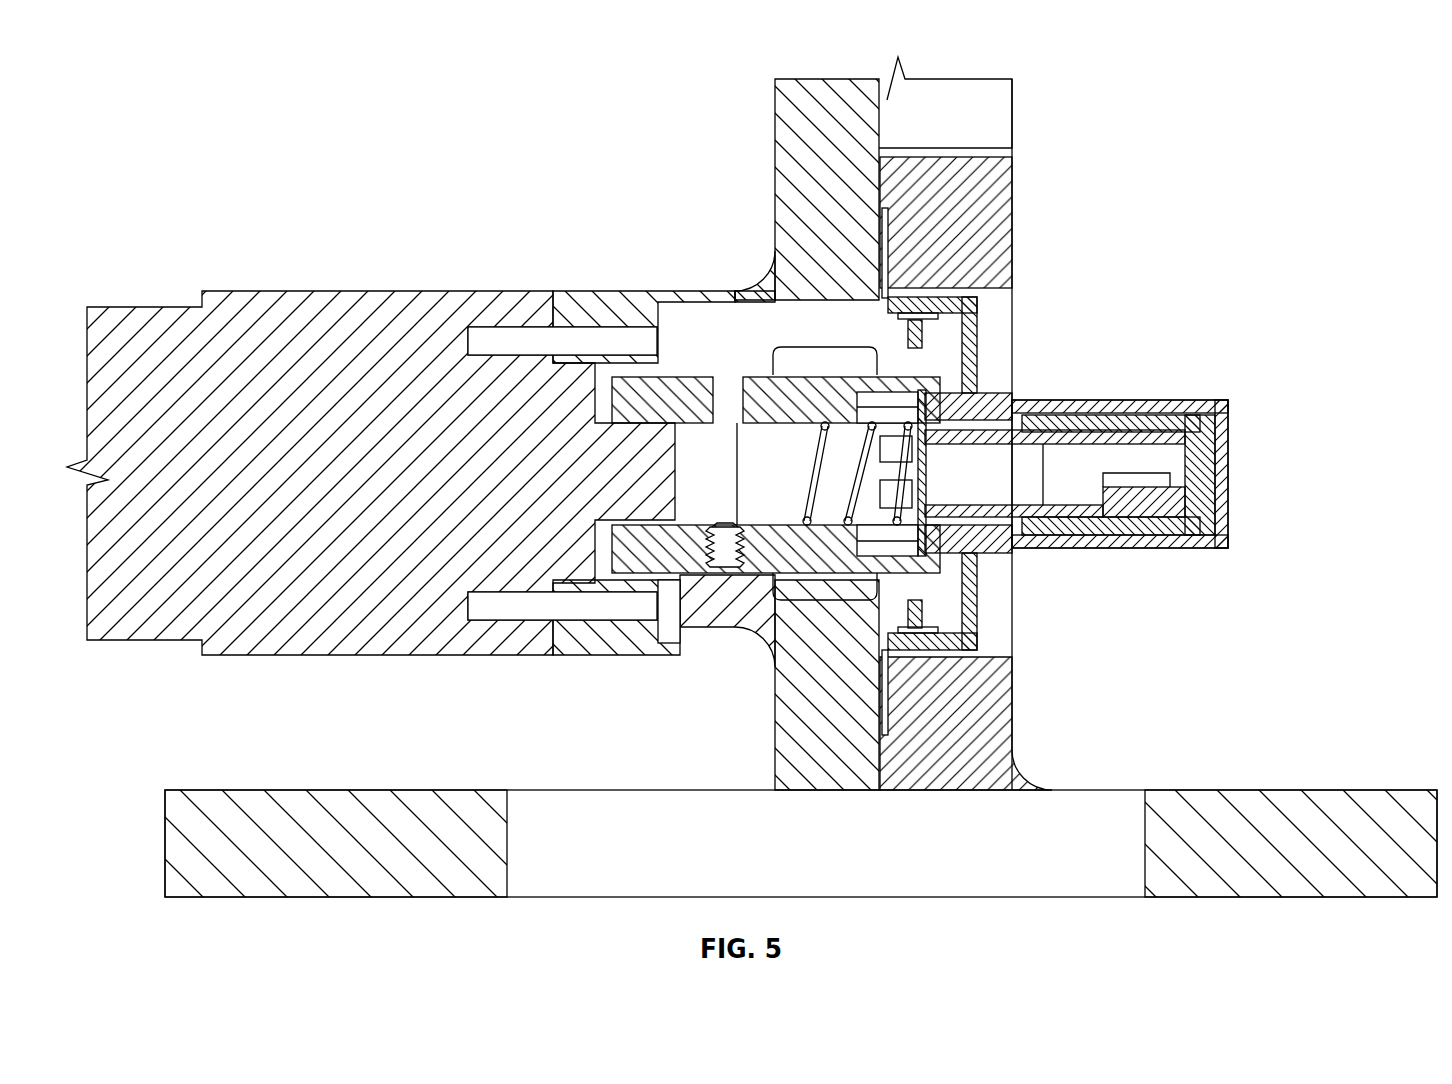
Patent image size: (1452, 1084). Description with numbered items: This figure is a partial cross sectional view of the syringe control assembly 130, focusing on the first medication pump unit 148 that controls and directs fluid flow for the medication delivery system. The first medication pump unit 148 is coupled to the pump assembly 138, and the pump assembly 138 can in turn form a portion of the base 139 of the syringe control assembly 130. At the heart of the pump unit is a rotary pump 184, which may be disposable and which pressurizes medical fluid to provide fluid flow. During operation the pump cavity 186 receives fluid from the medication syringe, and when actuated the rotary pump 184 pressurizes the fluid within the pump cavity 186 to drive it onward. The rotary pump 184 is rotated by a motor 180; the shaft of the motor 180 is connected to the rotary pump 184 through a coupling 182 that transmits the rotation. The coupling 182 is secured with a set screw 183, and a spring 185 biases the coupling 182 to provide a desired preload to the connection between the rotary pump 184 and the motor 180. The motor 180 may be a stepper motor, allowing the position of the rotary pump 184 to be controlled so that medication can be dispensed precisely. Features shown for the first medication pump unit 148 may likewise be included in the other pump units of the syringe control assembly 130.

The syringe control assembly 130 is at (1256, 78).
The first medication pump unit 148 is at (180, 159).
The motor 180 is at (232, 302).
The coupling 182 is at (683, 392).
The set screw 183 is at (728, 524).
The rotary pump 184 is at (1128, 398).
The spring 185 is at (805, 445).
The pump cavity 186 is at (953, 347).
The pump assembly 138 is at (985, 693).
The base 139 is at (1303, 885).